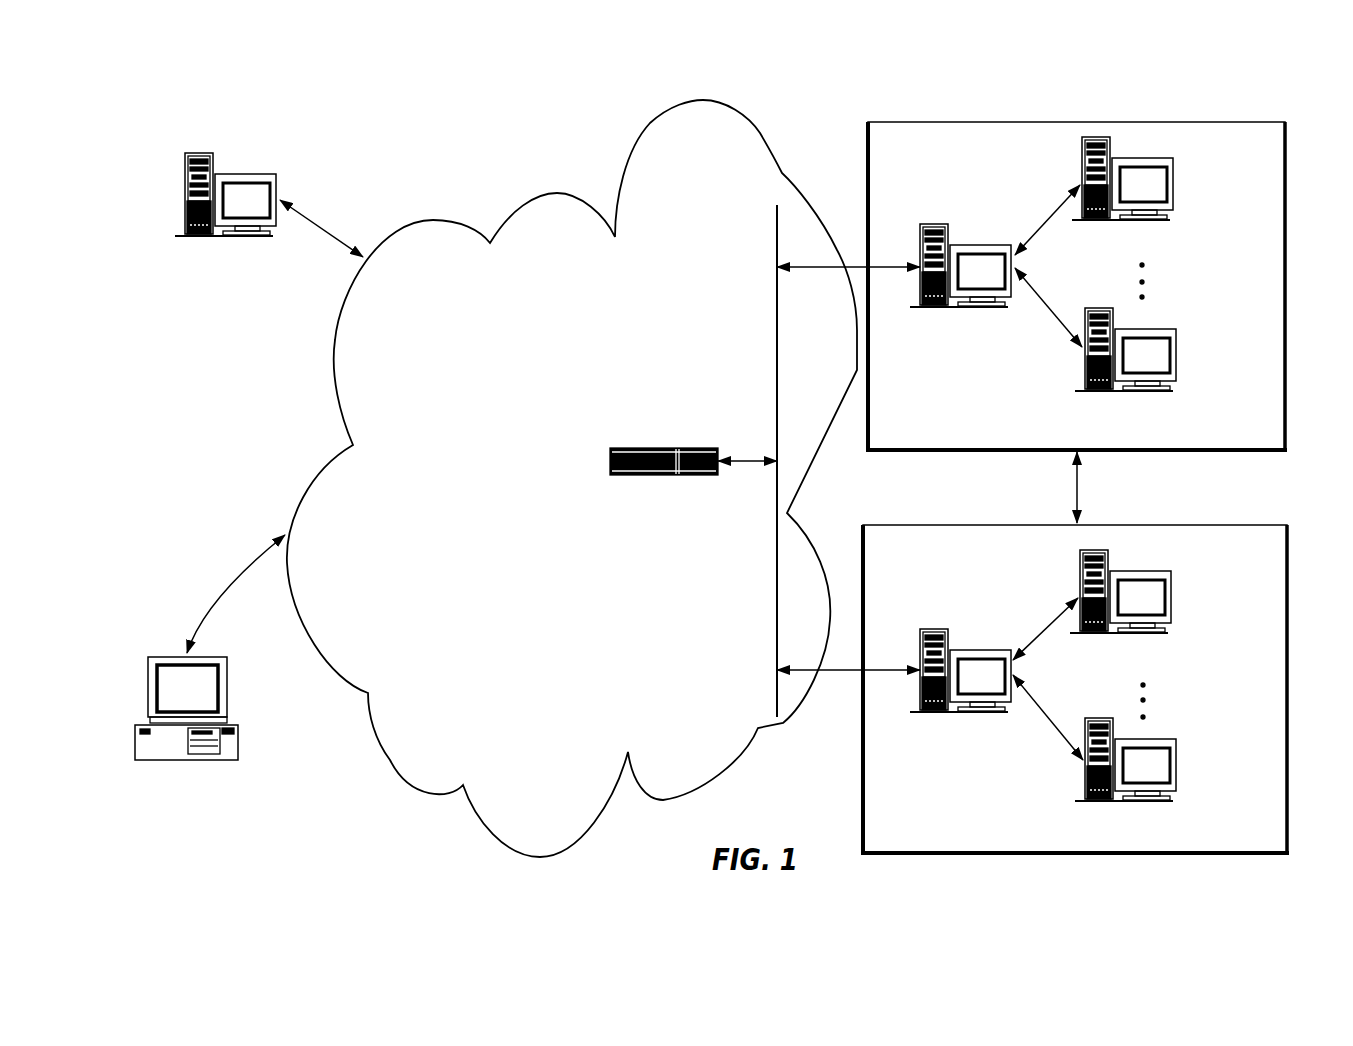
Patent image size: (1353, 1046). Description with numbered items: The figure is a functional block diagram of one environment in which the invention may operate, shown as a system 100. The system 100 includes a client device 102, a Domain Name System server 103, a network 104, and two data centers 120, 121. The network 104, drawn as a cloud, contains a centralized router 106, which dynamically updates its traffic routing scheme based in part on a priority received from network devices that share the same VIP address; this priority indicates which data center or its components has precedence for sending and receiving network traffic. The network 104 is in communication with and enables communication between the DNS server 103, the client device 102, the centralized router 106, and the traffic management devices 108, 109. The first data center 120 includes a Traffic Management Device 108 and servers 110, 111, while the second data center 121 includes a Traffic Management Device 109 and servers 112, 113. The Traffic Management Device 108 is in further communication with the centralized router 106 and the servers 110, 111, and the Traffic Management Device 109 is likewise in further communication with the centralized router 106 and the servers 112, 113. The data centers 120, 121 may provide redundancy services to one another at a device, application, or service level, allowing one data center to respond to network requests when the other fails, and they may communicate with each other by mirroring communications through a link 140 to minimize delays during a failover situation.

The system 100 is at (373, 108).
The client device 102 is at (227, 683).
The Domain Name System (DNS) server 103 is at (258, 175).
The network 104 is at (553, 193).
The centralized router 106 is at (660, 448).
The Traffic Management Device (TMD) 108 is at (1005, 210).
The Traffic Management Device (TMD) 109 is at (990, 615).
The server 110 is at (1175, 160).
The server 111 is at (1178, 330).
The server 112 is at (1171, 572).
The server 113 is at (1176, 740).
The data center 120 is at (1072, 122).
The data center 121 is at (965, 525).
The link 140 is at (1077, 482).